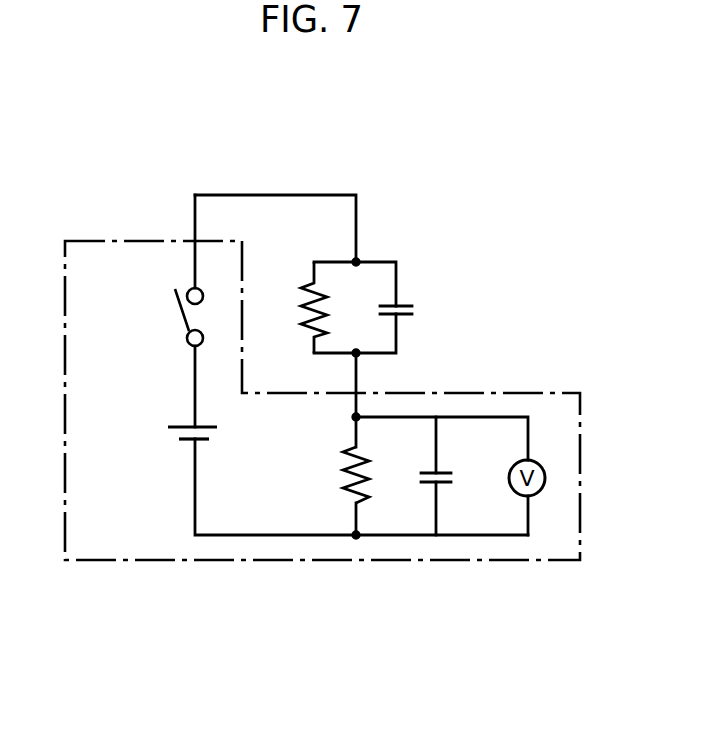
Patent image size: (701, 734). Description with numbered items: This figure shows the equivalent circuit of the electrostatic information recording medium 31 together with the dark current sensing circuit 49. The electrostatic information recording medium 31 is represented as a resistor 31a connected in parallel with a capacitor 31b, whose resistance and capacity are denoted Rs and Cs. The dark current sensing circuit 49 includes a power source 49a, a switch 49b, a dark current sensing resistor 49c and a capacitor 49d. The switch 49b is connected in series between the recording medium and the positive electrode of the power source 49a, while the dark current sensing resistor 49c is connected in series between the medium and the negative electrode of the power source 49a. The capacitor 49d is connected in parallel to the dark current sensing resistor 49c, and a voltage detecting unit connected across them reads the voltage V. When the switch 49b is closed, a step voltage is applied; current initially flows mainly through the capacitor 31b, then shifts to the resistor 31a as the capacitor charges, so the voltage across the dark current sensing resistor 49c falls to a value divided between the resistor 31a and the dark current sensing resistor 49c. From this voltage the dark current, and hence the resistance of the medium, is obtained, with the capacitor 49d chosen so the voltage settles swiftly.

The electrostatic information recording medium 31 is at (369, 264).
The resistor 31a is at (311, 283).
The capacitor 31b is at (405, 305).
The dark current sensing circuit 49 is at (268, 560).
The power source 49a is at (183, 440).
The switch 49b is at (177, 309).
The dark current sensing resistor 49c is at (361, 478).
The capacitor 49d is at (443, 481).